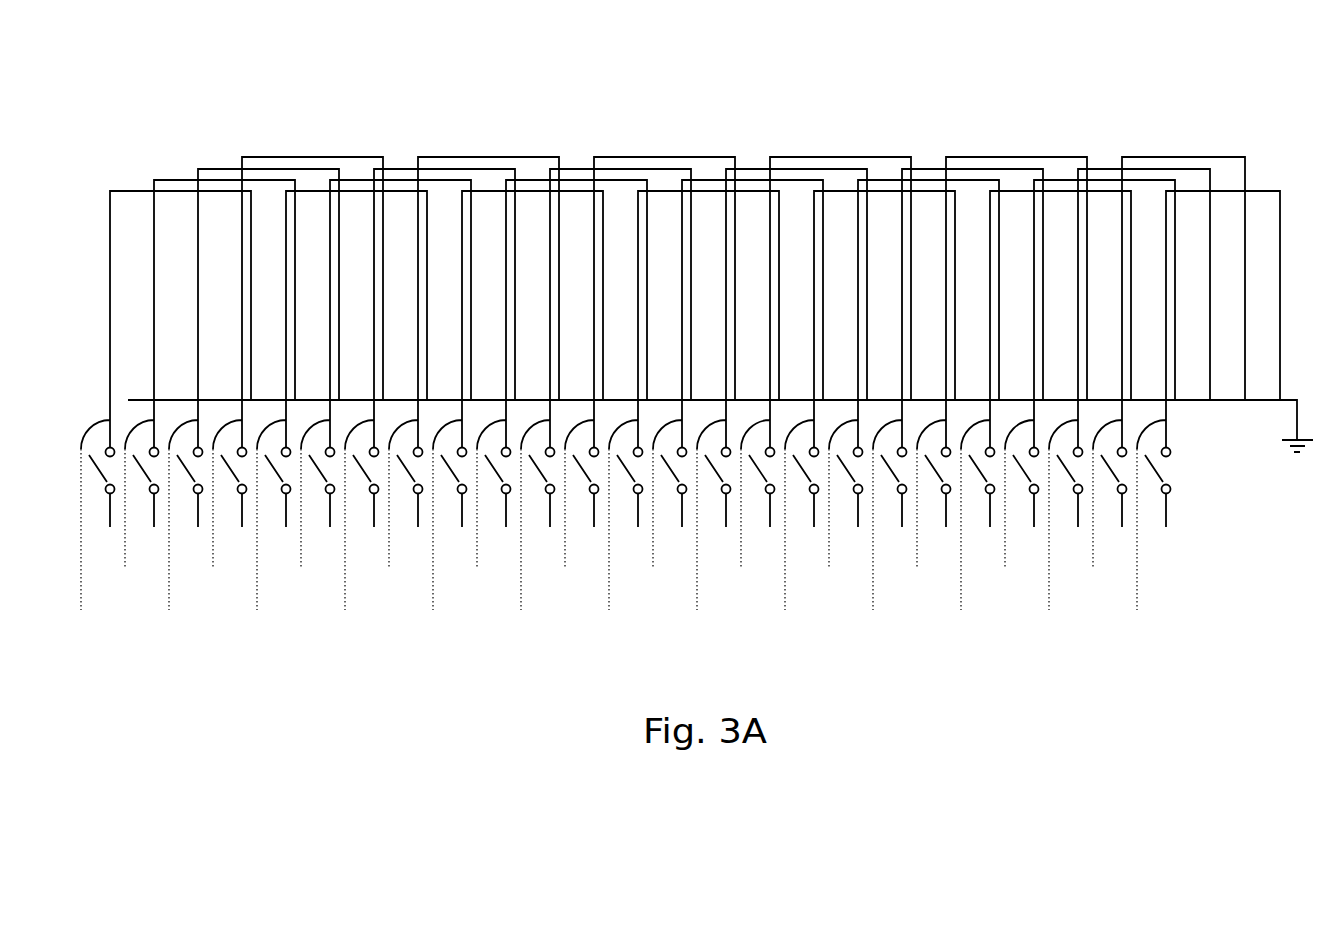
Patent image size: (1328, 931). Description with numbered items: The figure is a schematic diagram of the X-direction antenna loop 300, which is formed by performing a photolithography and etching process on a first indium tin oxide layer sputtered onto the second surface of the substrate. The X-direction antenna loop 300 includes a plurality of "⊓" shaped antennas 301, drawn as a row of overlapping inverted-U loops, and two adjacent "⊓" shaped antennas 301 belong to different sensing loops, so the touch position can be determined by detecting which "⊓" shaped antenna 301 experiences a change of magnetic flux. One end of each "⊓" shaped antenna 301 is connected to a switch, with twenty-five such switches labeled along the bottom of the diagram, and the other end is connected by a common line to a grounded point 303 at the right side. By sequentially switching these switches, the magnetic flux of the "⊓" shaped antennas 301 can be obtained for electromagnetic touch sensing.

The X-direction antenna loop 300 is at (134, 40).
The ⊓ shaped antenna 301 is at (135, 191).
The grounded point 303 is at (1293, 420).